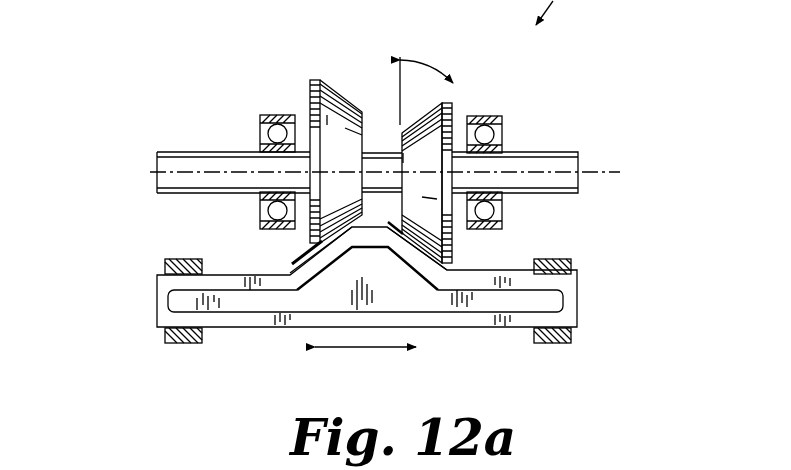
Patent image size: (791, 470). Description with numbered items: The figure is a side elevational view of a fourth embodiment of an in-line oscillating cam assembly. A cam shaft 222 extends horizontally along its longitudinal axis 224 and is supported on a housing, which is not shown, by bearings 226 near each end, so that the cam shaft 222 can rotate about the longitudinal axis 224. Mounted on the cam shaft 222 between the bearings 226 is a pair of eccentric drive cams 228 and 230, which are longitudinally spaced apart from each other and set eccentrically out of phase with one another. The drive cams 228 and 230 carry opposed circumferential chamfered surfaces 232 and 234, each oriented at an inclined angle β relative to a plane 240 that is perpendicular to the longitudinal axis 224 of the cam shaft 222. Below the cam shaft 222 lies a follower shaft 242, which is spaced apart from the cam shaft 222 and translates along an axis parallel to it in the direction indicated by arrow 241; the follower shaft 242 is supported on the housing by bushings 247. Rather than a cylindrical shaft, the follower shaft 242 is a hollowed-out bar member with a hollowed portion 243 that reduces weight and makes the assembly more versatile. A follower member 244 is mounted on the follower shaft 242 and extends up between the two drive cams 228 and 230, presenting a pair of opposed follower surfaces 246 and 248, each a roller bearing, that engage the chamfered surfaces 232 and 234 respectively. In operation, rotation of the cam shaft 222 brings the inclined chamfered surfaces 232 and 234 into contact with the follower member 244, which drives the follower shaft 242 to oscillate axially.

The cam shaft 222 is at (548, 158).
The longitudinal axis 224 is at (593, 172).
The bearings 226 is at (263, 115).
The eccentric drive cam 228 is at (312, 79).
The eccentric drive cam 230 is at (449, 101).
The chamfered surface 232 is at (347, 100).
The chamfered surface 234 is at (434, 104).
The plane 240 is at (398, 85).
The arrow 241 is at (353, 350).
The follower shaft 242 is at (580, 288).
The hollowed portion 243 is at (166, 300).
The follower member 244 is at (290, 272).
The follower surface 246 is at (300, 252).
The bushings 247 is at (195, 345).
The follower surface 248 is at (460, 267).